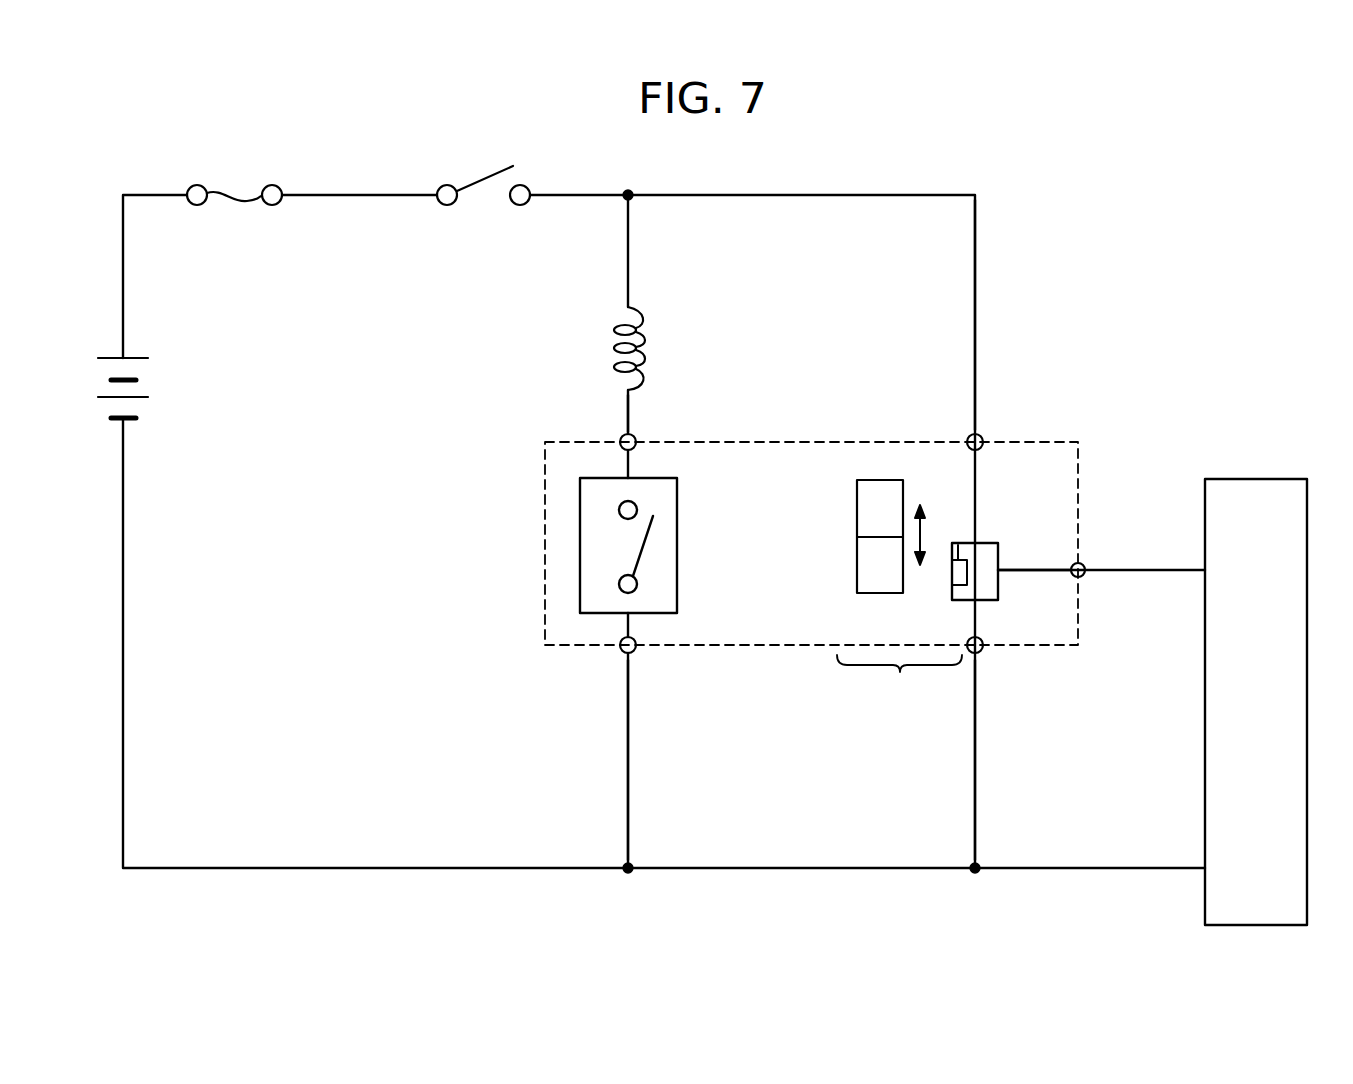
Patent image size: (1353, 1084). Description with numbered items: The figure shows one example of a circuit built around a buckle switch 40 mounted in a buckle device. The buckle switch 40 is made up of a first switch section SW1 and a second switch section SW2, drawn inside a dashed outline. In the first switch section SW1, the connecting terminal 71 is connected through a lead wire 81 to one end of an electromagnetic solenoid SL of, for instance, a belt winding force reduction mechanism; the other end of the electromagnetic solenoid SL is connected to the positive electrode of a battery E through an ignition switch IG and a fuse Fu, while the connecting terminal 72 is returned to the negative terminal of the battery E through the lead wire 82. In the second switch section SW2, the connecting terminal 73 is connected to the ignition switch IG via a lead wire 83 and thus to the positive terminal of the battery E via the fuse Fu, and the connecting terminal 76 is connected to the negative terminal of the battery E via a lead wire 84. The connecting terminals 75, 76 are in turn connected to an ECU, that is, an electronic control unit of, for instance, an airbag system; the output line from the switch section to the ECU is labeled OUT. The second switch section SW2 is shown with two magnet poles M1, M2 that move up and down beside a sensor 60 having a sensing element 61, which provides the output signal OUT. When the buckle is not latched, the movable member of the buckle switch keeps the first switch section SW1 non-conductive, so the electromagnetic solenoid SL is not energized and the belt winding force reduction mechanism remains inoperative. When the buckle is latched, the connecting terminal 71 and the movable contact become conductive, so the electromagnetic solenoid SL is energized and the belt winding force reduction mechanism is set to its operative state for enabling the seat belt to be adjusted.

The buckle switch 40 is at (838, 440).
The magnetic sensor 60 is at (992, 580).
The sensor detection element 61 is at (958, 543).
The connecting terminal 71 is at (634, 437).
The connecting terminal 72 is at (635, 650).
The connecting terminal 73 is at (982, 435).
The connecting terminal 75 is at (1085, 565).
The connecting terminal 76 is at (983, 650).
The lead wire 81 is at (627, 410).
The lead wire 82 is at (627, 771).
The lead wire 83 is at (975, 275).
The lead wire 84 is at (975, 800).
The fuse Fu is at (234, 174).
The ignition switch IG is at (483, 169).
The battery E is at (122, 373).
The electromagnetic solenoid SL is at (652, 341).
The first switch section SW1 is at (568, 545).
The second switch section SW2 is at (899, 680).
The magnet N pole M1 is at (855, 567).
The magnet S pole M2 is at (855, 513).
The output OUT is at (1034, 554).
The electronic control unit ECU is at (1256, 702).